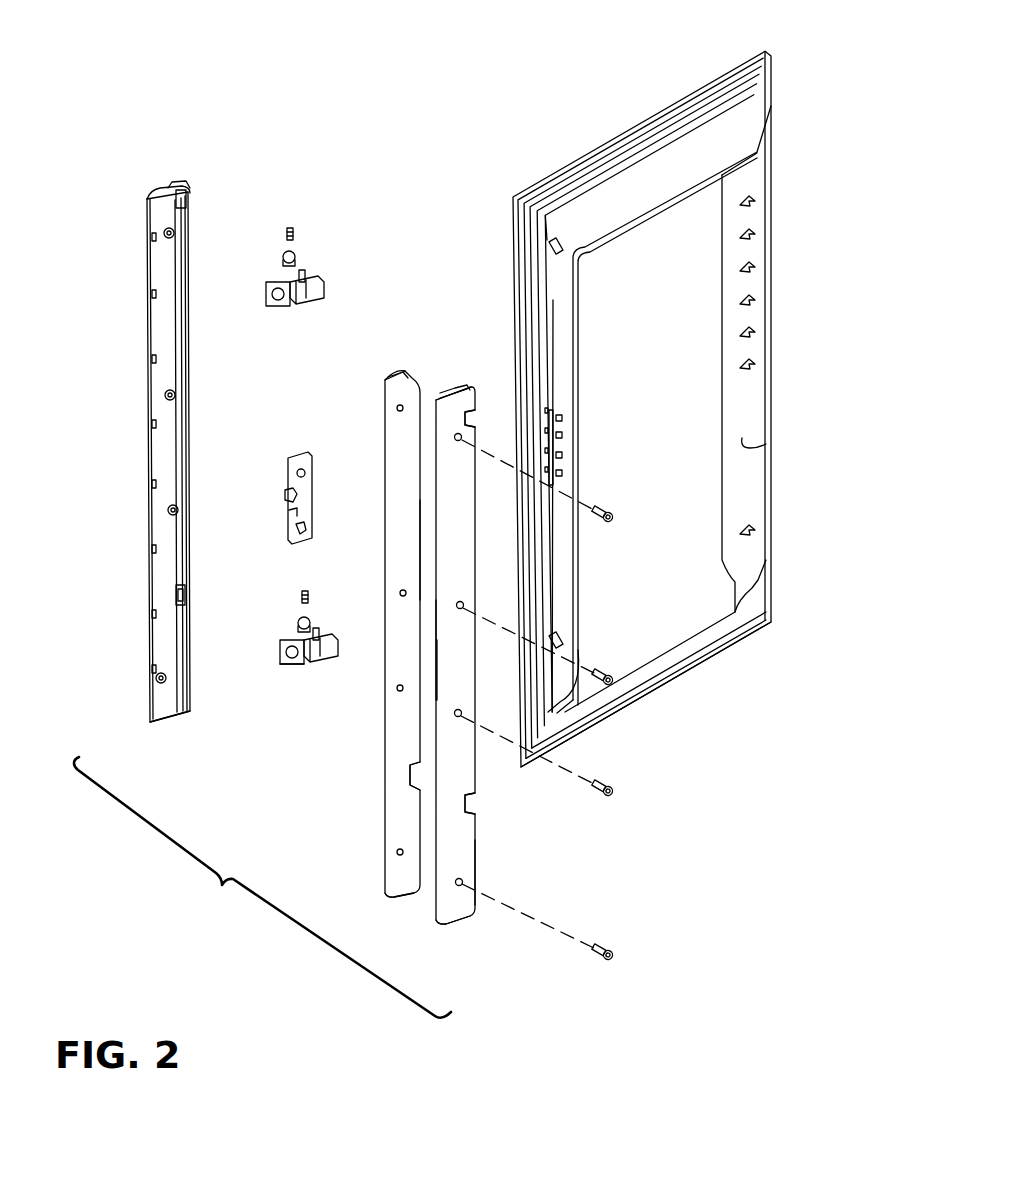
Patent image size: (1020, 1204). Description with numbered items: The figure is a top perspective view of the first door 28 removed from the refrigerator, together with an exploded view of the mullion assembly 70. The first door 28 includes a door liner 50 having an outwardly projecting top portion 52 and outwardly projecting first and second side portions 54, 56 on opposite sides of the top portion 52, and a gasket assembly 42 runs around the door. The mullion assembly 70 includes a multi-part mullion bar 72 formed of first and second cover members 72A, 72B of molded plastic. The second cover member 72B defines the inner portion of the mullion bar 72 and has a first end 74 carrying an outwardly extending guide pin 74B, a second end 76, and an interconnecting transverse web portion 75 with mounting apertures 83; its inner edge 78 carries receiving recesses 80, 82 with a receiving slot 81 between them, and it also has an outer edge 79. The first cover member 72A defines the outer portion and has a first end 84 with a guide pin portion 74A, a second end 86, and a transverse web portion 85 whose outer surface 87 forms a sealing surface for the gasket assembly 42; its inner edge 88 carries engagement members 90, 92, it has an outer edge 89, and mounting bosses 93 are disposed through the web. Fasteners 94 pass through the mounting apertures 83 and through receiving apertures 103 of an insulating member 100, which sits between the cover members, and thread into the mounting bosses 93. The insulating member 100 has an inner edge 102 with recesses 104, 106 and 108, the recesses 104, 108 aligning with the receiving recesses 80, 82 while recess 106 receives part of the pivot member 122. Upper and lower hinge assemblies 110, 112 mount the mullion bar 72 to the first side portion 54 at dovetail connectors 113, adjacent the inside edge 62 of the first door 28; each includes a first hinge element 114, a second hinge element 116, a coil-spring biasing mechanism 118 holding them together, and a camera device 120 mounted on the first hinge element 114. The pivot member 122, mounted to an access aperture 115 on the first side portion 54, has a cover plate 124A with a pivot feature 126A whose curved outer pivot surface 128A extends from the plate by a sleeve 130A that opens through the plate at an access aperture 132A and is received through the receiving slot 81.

The first door 28 is at (626, 84).
The gasket assembly 42 is at (625, 152).
The door liner 50 is at (683, 292).
The top portion 52 is at (700, 140).
The first side portion 54 is at (556, 285).
The second side portion 56 is at (742, 442).
The inside edge 62 is at (546, 238).
The mullion assembly 70 is at (325, 128).
The mullion bar 72 is at (311, 553).
The first cover member 72A is at (152, 172).
The second cover member 72B is at (447, 385).
The first end 74 is at (470, 383).
The guide pin portion 74A is at (176, 185).
The guide pin 74B is at (420, 375).
The transverse web portion 75 is at (455, 660).
The second end 76 is at (460, 905).
The inner edge 78 is at (470, 855).
The outer edge 79 is at (410, 862).
The receiving recess 80 is at (474, 412).
The receiving slot 81 is at (463, 605).
The receiving recess 82 is at (470, 810).
The mounting apertures 83 is at (458, 440).
The first end 84 is at (183, 190).
The transverse web portion 85 is at (156, 542).
The second end 86 is at (171, 722).
The outer surface 87 is at (150, 465).
The inner edge 88 is at (189, 307).
The outer edge 89 is at (151, 364).
The engagement member 90 is at (191, 196).
The engagement member 92 is at (186, 590).
The mounting bosses 93 is at (173, 233).
The fasteners 94 is at (616, 522).
The insulating member 100 is at (386, 785).
The inner edge 102 is at (430, 655).
The receiving apertures 103 is at (400, 409).
The recess 104 is at (387, 373).
The recess 106 is at (420, 570).
The recess 108 is at (405, 762).
The first hinge assembly 110 is at (311, 275).
The second hinge assembly 112 is at (300, 672).
The dovetail connectors 113 is at (560, 245).
The first hinge element 114 is at (300, 300).
The access aperture 115 is at (568, 420).
The second hinge element 116 is at (283, 250).
The biasing mechanism 118 is at (292, 233).
The camera device 120 is at (276, 300).
The pivot member 122 is at (301, 455).
The cover plate 124A is at (286, 478).
The pivot feature 126A is at (280, 493).
The curved outer pivot surface 128A is at (283, 515).
The sleeve 130A is at (313, 491).
The access aperture 132A is at (300, 532).